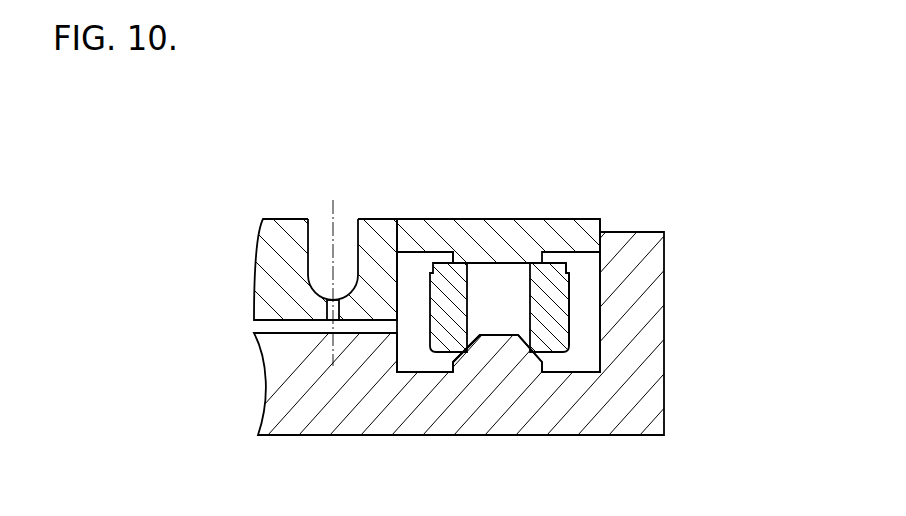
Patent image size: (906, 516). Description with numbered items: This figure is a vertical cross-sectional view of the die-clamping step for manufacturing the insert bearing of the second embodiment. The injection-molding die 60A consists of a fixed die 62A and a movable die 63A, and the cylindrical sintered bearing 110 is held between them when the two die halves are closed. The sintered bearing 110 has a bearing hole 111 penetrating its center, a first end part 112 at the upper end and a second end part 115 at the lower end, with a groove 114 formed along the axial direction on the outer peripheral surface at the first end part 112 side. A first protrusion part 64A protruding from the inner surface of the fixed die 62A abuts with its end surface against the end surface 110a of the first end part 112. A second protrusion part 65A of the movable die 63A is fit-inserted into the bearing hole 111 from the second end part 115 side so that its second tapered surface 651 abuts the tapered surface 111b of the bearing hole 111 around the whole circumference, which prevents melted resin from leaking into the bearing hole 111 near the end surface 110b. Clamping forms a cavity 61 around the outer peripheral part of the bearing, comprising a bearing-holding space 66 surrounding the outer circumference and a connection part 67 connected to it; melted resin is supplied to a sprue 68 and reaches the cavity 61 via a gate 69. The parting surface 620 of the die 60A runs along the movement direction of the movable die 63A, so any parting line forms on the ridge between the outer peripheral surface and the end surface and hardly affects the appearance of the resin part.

The injection-molding die 60A is at (613, 211).
The cavity 61 is at (406, 267).
The fixed die 62A is at (598, 221).
The movable die 63A is at (643, 398).
The first protrusion part 64A is at (447, 251).
The second protrusion part 65A is at (503, 335).
The bearing-holding space 66 is at (592, 330).
The connection part 67 is at (276, 325).
The sprue 68 is at (352, 220).
The gate 69 is at (325, 308).
The sintered bearing 110 is at (577, 293).
The end surface of the first end part 110a is at (437, 251).
The end surface of the second end part 110b is at (557, 353).
The bearing hole 111 is at (468, 293).
The tapered surface 111b is at (463, 353).
The first end part 112 is at (541, 264).
The groove 114 is at (572, 258).
The second end part 115 is at (543, 367).
The parting surface 620 is at (602, 240).
The second tapered surface 651 is at (457, 358).